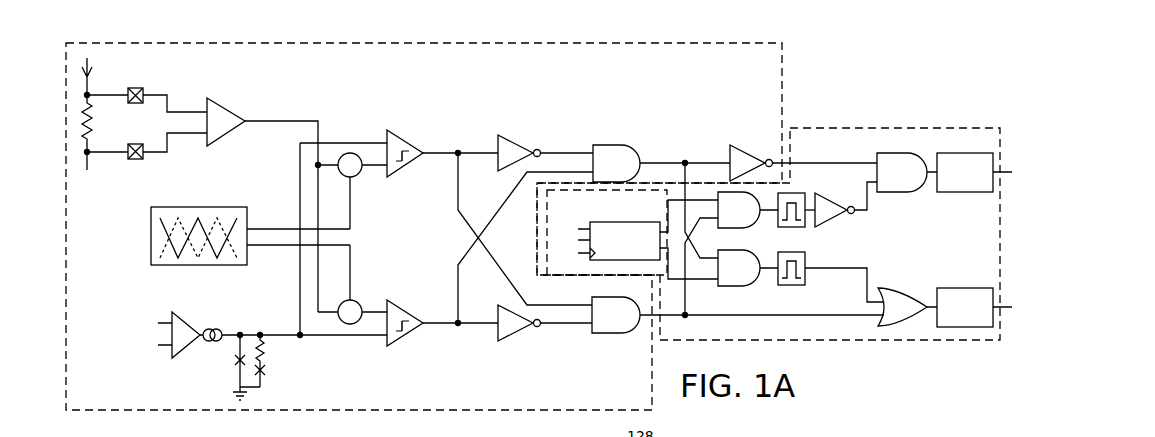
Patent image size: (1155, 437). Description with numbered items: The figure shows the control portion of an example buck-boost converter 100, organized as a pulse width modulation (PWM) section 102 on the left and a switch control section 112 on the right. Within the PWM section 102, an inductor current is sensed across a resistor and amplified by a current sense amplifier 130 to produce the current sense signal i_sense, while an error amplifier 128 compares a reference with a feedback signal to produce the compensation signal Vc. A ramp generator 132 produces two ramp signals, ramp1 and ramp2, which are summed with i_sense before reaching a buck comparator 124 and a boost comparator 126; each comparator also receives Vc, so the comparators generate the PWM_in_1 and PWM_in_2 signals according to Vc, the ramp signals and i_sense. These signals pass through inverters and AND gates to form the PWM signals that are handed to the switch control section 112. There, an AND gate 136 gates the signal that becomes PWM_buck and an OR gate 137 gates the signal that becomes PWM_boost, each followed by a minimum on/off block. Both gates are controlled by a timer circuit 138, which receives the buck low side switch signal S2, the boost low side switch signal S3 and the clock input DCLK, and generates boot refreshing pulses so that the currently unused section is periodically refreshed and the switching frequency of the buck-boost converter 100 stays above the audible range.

The buck-boost converter 100 is at (858, 42).
The pulse width modulation (PWM) section 102 is at (496, 43).
The switch control section 112 is at (820, 128).
The buck comparator 124 is at (405, 166).
The boost comparator 126 is at (405, 336).
The error amplifier 128 is at (186, 349).
The current sense amplifier 130 is at (228, 133).
The ramp generator 132 is at (157, 236).
The AND gate 136 is at (885, 153).
The OR gate 137 is at (892, 289).
The timer circuit 138 is at (612, 222).